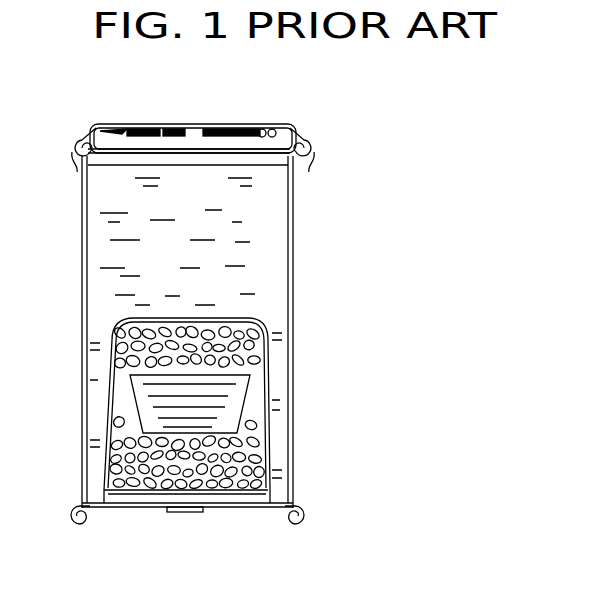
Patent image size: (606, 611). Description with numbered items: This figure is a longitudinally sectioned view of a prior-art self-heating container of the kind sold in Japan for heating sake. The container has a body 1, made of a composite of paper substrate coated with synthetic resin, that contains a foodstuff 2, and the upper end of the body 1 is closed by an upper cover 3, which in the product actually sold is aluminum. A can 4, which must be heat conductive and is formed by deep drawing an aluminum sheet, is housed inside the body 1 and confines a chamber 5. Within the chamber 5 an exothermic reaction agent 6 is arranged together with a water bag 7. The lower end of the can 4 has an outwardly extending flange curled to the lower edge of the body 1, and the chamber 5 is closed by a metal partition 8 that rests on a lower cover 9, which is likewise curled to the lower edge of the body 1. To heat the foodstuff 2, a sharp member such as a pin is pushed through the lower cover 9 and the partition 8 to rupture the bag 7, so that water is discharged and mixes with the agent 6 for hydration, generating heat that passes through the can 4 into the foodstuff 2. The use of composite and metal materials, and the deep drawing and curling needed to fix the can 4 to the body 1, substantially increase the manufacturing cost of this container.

The body 1 is at (292, 256).
The foodstuff 2 is at (272, 202).
The upper cover 3 is at (287, 124).
The can 4 is at (110, 360).
The chamber 5 is at (124, 391).
The exothermic reaction agent 6 is at (262, 342).
The water bag 7 is at (237, 402).
The partition 8 is at (230, 495).
The lower cover 9 is at (137, 508).